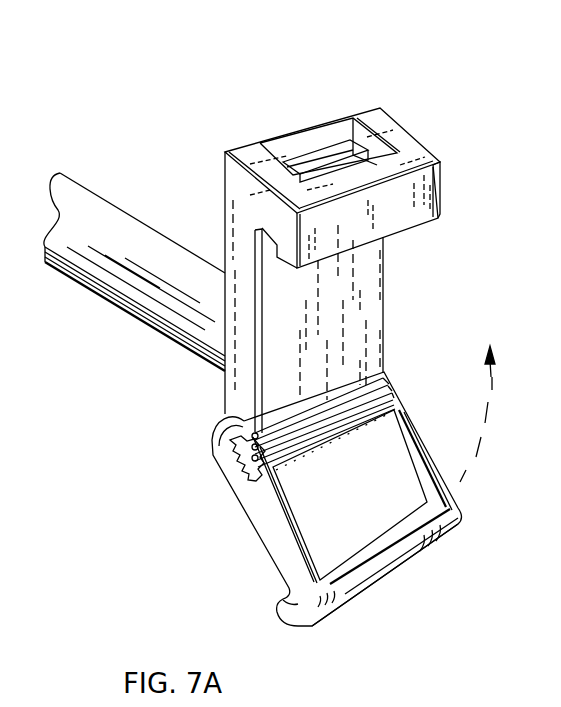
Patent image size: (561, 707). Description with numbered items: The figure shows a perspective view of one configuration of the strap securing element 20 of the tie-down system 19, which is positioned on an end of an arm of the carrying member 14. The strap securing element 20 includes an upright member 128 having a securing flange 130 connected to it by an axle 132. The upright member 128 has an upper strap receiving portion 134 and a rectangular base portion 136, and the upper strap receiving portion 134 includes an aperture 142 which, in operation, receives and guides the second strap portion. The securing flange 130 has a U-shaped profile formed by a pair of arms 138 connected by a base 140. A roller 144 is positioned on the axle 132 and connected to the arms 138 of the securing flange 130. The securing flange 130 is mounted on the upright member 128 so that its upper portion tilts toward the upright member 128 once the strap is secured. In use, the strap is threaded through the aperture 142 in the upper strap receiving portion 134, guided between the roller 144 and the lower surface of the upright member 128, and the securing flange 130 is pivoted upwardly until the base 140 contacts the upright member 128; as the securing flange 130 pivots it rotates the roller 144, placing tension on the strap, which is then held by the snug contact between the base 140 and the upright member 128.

The carrying member 14 is at (112, 222).
The tie-down system 19 is at (301, 53).
The strap securing element 20 is at (367, 91).
The upright member 128 is at (392, 297).
The securing flange 130 is at (248, 562).
The axle 132 is at (227, 476).
The upper strap receiving portion 134 is at (437, 185).
The rectangular base portion 136 is at (377, 352).
The arms 138 is at (398, 470).
The base 140 is at (377, 570).
The aperture 142 is at (321, 162).
The roller 144 is at (305, 442).